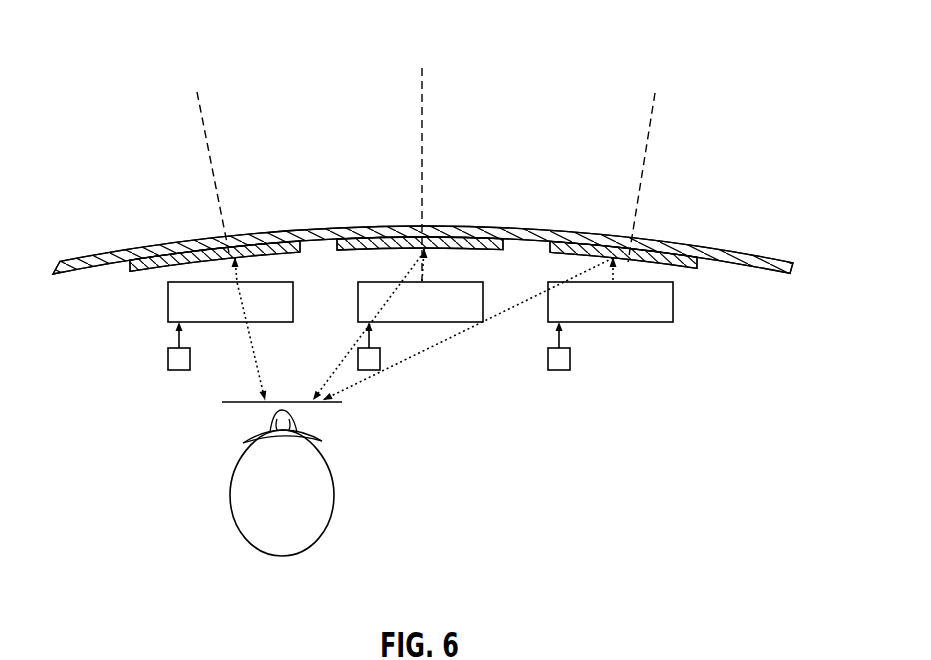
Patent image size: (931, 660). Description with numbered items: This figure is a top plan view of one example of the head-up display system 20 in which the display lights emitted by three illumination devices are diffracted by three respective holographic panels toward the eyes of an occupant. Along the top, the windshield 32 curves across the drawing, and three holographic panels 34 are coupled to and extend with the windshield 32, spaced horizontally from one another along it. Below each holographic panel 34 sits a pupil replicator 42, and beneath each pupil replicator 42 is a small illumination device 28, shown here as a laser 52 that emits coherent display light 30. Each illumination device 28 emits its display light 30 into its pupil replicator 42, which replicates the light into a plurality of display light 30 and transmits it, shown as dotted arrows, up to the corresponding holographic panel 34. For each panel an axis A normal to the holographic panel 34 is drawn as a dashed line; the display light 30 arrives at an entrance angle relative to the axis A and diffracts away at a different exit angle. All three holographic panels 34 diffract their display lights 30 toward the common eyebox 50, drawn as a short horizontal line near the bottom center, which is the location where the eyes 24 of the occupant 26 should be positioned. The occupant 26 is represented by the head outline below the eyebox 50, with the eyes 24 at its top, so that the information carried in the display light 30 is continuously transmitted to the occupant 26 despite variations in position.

The head-up display system 20 is at (168, 62).
The windshield 32 is at (768, 255).
The holographic panel 34 is at (164, 248).
The axis A is at (199, 102).
The pupil replicator 42 is at (160, 311).
The laser 52 is at (167, 362).
The illumination device 28 is at (178, 371).
The display light 30 is at (240, 290).
The eyebox 50 is at (234, 404).
The occupant 26 is at (280, 545).
The eyes 24 is at (302, 437).